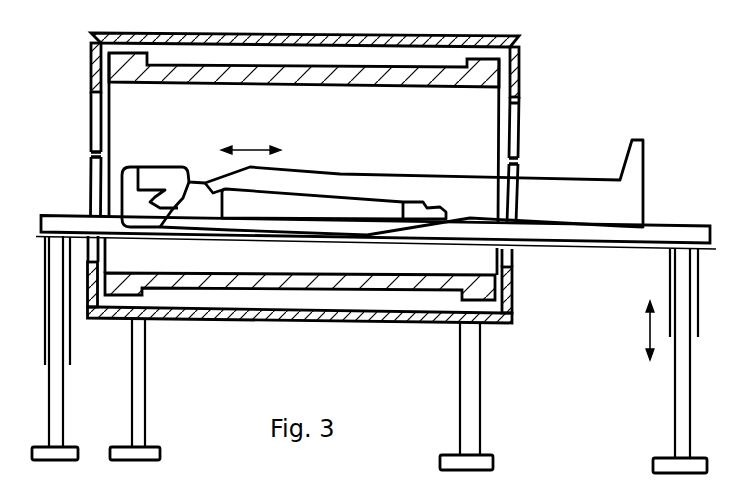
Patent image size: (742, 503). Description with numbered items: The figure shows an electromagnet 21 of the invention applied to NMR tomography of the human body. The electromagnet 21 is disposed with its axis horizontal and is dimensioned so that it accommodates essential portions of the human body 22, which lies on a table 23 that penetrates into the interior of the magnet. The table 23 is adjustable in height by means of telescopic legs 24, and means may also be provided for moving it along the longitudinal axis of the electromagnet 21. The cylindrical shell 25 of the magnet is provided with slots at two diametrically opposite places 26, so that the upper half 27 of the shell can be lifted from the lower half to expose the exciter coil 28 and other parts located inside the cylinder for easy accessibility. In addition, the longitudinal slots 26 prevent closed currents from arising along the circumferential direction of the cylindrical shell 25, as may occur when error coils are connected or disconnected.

The electromagnet 21 is at (526, 68).
The human body 22 is at (318, 178).
The table 23 is at (573, 233).
The telescopic legs 24 is at (58, 373).
The cylindrical shell 25 is at (373, 325).
The slots 26 is at (89, 155).
The upper half of the cylindrical shell 27 is at (126, 33).
The exciter coil 28 is at (401, 83).